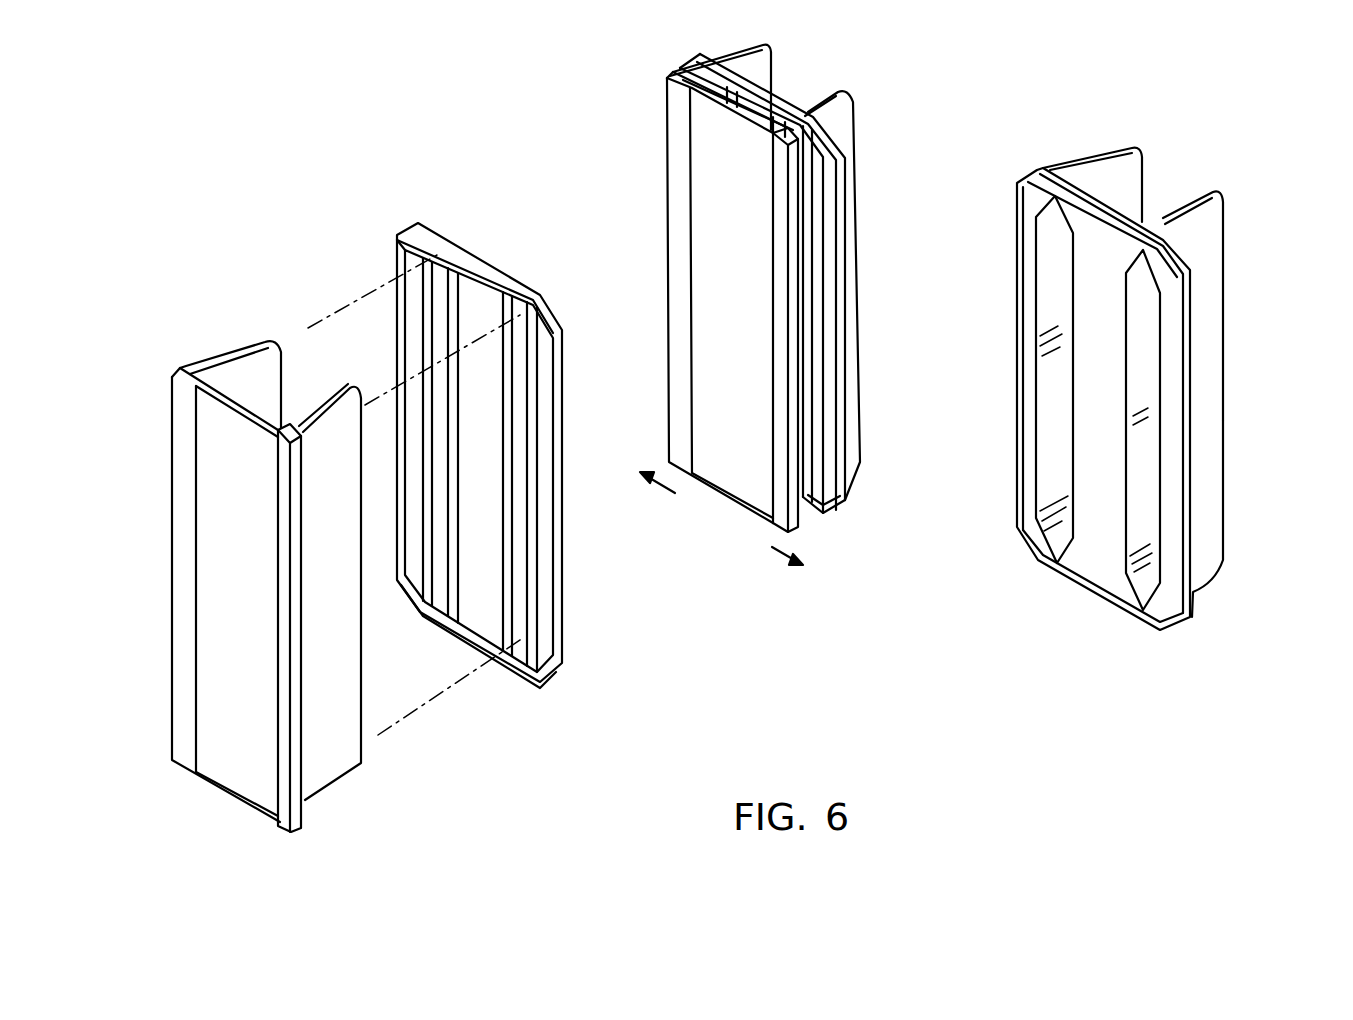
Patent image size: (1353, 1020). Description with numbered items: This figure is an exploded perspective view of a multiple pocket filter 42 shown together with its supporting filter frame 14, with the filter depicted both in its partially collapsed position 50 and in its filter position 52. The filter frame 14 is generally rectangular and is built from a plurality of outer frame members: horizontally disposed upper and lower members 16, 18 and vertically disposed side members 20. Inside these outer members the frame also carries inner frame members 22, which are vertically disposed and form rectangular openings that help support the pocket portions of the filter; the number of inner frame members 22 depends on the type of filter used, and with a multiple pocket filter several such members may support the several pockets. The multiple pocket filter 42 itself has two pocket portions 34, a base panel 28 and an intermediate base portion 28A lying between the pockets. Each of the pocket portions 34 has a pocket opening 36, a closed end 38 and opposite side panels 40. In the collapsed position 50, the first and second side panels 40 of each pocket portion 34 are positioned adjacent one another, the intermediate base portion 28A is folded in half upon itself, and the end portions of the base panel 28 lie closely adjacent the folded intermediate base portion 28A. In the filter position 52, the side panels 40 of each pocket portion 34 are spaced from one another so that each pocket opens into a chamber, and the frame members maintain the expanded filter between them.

The filter frame 14 is at (835, 143).
The upper member 16 is at (478, 257).
The lower member 18 is at (480, 647).
The side members 20 is at (393, 257).
The inner frame members 22 is at (420, 338).
The base panel 28 is at (300, 807).
The intermediate base portion 28A is at (255, 713).
The pocket portions 34 is at (1082, 175).
The pocket openings 36 is at (1051, 420).
The closed ends 38 is at (1227, 252).
The side panels 40 is at (1213, 384).
The multiple pocket filter 42 is at (237, 405).
The collapsed position 50 is at (198, 330).
The filter position 52 is at (1047, 133).